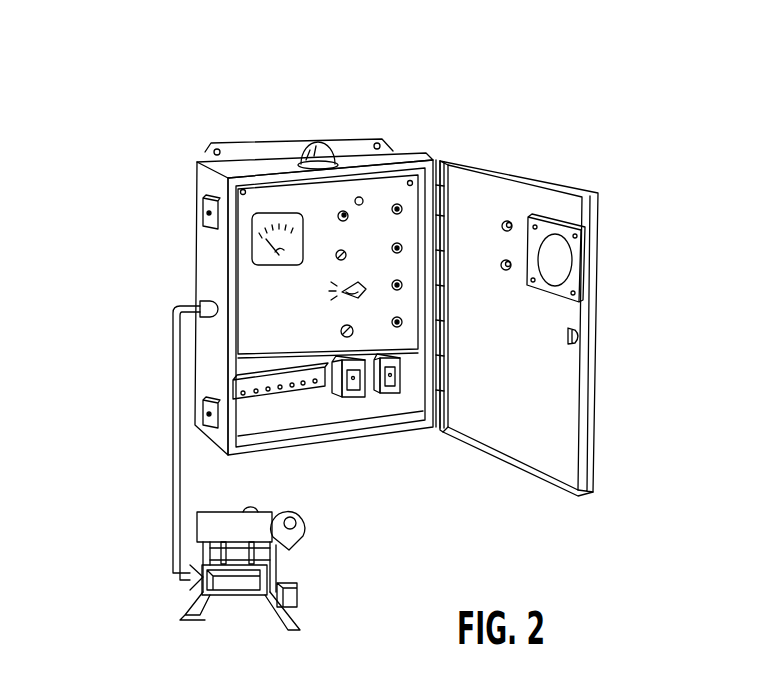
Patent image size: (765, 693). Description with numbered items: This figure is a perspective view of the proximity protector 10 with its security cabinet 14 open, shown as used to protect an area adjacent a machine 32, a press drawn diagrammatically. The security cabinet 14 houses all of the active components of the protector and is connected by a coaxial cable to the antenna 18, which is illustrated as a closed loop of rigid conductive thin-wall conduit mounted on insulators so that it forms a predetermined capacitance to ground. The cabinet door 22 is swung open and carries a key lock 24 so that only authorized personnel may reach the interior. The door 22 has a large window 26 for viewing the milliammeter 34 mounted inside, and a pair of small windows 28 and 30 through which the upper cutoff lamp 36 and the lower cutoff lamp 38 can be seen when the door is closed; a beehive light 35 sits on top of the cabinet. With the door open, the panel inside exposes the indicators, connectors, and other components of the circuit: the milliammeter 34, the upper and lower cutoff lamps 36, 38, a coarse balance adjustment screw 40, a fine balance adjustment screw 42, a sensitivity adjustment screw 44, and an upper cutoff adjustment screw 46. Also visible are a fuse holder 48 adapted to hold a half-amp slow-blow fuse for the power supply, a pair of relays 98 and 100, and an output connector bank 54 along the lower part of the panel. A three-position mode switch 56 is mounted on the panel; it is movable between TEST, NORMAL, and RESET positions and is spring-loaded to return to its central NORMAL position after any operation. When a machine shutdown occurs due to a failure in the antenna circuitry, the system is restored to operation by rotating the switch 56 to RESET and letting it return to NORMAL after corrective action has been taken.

The proximity protector 10 is at (161, 177).
The security cabinet 14 is at (205, 242).
The antenna 18 is at (236, 598).
The door 22 is at (567, 424).
The key lock 24 is at (578, 334).
The large window 26 is at (564, 260).
The small window 28 is at (508, 219).
The small window 30 is at (505, 272).
The machine 32 is at (240, 563).
The milliammeter 34 is at (263, 253).
The beehive light 35 is at (320, 150).
The upper cutoff lamp 36 is at (341, 214).
The lower cutoff lamp 38 is at (336, 258).
The coarse balance adjustment screw 40 is at (398, 205).
The fine balance adjustment screw 42 is at (402, 248).
The sensitivity adjustment screw 44 is at (402, 285).
The upper cutoff adjustment screw 46 is at (402, 322).
The fuse holder 48 is at (342, 332).
The output connector bank 54 is at (288, 398).
The three-position mode switch 56 is at (350, 300).
The relay 98 is at (353, 390).
The relay 100 is at (390, 387).